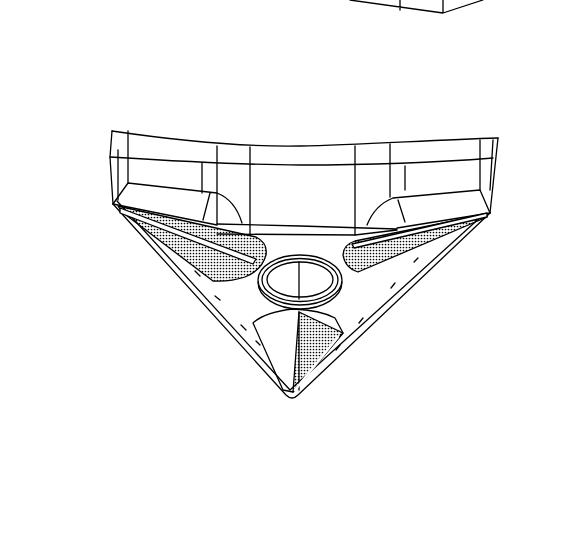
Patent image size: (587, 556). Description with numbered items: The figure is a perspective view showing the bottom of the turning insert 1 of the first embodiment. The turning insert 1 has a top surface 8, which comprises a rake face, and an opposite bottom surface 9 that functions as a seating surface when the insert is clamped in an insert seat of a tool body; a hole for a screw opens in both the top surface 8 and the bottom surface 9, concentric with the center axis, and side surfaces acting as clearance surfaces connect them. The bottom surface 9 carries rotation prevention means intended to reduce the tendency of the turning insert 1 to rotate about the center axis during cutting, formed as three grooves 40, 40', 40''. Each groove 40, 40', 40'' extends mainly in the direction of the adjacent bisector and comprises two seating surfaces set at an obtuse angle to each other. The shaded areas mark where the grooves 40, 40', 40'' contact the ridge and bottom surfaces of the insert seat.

The turning insert 1 is at (123, 79).
The top surface 8 is at (267, 122).
The bottom surface 9 is at (228, 352).
The groove 40 is at (185, 267).
The groove 40' is at (431, 265).
The groove 40'' is at (339, 358).